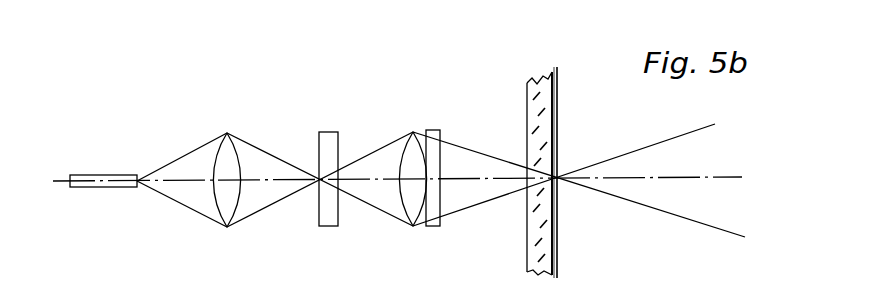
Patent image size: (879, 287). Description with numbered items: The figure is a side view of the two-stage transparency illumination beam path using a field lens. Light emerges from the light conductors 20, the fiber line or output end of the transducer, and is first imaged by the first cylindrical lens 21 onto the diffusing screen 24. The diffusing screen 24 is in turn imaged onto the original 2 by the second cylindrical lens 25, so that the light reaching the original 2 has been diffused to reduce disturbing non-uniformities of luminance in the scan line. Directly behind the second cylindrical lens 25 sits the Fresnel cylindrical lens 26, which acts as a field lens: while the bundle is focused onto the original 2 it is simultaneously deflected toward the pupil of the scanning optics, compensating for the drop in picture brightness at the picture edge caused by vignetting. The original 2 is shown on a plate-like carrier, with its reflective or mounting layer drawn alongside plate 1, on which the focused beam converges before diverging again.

The transparent plate / substrate 1 is at (528, 104).
The original 2 is at (557, 115).
The light conductors 20 is at (111, 175).
The first cylindrical lens 21 is at (224, 162).
The diffusing screen 24 is at (323, 150).
The second cylindrical lens 25 is at (405, 160).
The Fresnel cylindrical lens 26 is at (435, 155).